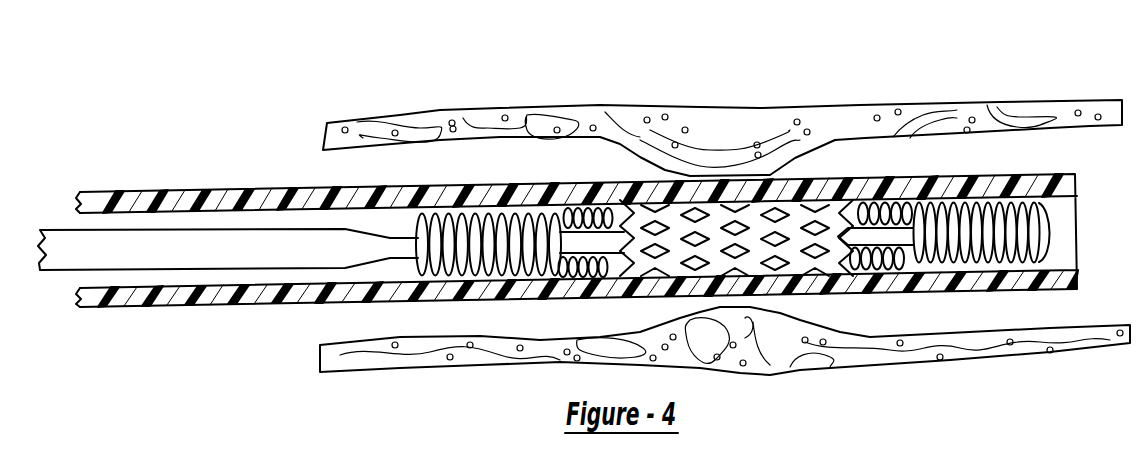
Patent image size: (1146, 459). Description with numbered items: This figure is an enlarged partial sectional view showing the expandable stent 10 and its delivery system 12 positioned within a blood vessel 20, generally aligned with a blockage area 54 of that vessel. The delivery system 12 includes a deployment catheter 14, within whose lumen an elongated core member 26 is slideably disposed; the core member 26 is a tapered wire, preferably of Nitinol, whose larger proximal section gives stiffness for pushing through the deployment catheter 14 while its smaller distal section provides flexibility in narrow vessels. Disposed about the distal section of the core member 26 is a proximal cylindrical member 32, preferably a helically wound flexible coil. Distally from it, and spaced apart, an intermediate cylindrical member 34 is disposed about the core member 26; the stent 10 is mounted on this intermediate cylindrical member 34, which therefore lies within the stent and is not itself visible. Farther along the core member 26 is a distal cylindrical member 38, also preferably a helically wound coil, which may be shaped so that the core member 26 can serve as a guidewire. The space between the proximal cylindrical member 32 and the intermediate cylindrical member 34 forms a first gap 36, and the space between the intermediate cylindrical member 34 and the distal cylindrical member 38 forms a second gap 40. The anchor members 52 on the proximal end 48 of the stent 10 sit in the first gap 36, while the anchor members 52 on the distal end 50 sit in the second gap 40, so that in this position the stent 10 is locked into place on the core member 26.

The expandable stent 10 is at (745, 226).
The delivery system 12 is at (181, 146).
The deployment catheter 14 is at (310, 191).
The blood vessel 20 is at (349, 121).
The core member 26 is at (173, 230).
The proximal cylindrical member 32 is at (472, 218).
The intermediate cylindrical member 34 is at (692, 238).
The first gap 36 is at (561, 279).
The distal cylindrical member 38 is at (968, 208).
The second gap 40 is at (884, 270).
The proximal end 48 is at (636, 230).
The distal end 50 is at (828, 229).
The anchor members 52 is at (593, 210).
The blockage area 54 is at (715, 155).